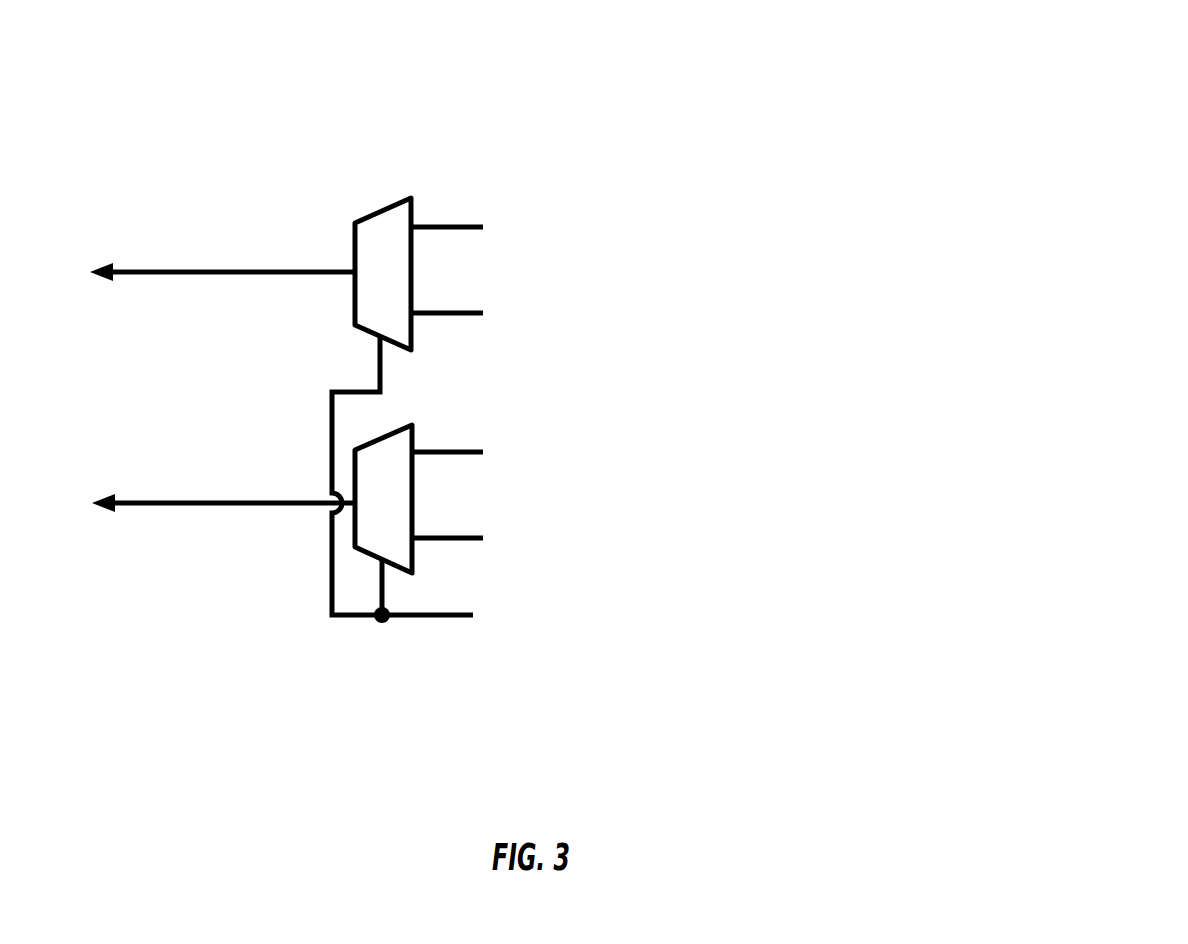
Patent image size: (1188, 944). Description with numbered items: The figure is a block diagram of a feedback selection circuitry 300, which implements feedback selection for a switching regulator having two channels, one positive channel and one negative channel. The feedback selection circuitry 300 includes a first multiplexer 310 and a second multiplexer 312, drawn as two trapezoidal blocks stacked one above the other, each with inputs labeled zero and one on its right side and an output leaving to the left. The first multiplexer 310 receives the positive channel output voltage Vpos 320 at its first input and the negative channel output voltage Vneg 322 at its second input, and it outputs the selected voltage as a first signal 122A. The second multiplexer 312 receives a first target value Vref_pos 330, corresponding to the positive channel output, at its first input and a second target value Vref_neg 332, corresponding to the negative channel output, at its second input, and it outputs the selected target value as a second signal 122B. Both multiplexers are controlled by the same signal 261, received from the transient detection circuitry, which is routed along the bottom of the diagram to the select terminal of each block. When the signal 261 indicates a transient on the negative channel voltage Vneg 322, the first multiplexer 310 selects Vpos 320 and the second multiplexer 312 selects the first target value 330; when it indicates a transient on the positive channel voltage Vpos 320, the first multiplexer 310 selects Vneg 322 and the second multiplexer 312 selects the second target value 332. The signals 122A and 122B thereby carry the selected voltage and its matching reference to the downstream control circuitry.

The feedback selection circuitry 300 is at (1068, 49).
The first multiplexer 310 is at (413, 193).
The second multiplexer 312 is at (414, 419).
The positive channel output voltage Vpos 320 is at (439, 218).
The negative channel output voltage Vneg 322 is at (439, 305).
The first target value Vref_pos 330 is at (439, 445).
The second target value Vref_neg 332 is at (439, 527).
The signal from transient detection circuitry 261 is at (470, 603).
The first signal 122A is at (191, 265).
The second signal 122B is at (205, 497).